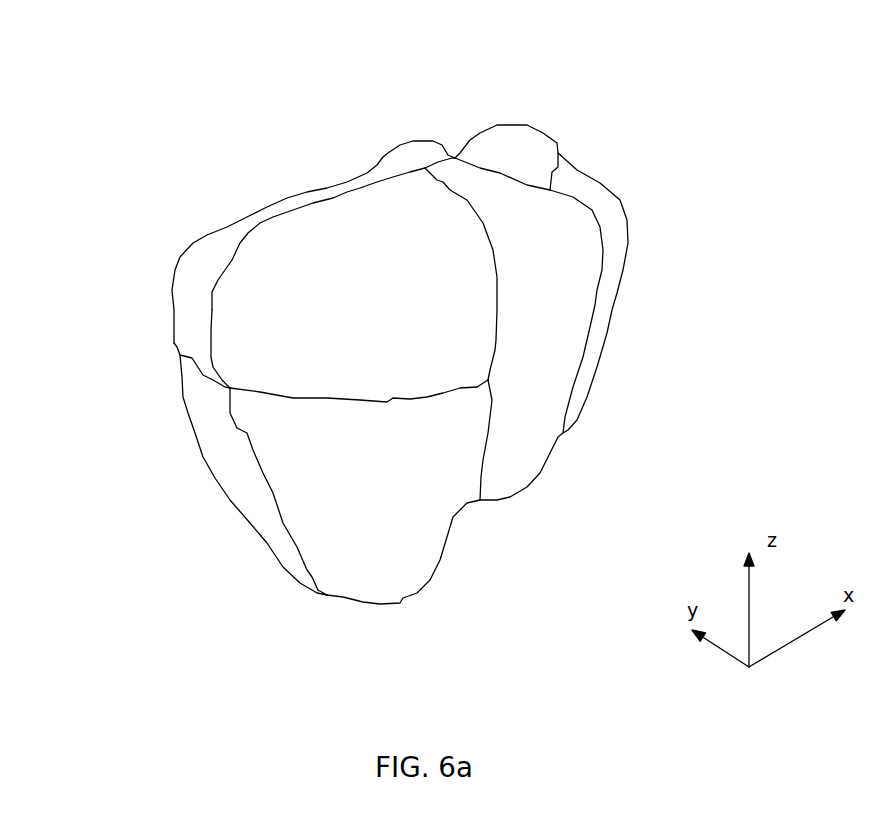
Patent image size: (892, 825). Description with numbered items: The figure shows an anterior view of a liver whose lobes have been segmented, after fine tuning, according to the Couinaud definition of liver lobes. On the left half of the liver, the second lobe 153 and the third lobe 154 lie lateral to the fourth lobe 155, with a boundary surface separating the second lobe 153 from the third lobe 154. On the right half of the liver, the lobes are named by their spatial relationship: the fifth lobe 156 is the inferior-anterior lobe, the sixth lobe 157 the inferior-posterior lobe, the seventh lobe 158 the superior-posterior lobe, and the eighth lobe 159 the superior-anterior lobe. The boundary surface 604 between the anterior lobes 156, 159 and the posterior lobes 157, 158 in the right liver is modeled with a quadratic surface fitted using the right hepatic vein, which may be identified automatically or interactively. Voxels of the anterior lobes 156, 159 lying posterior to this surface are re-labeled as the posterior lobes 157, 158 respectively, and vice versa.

The lobe 2 153 is at (530, 143).
The lobe 3 154 is at (613, 257).
The lobe 4 155 is at (520, 418).
The lobe 5 (inferior-anterior lobe) 156 is at (398, 532).
The lobe 6 (inferior-posterior lobe) 157 is at (242, 475).
The lobe 7 (superior-posterior lobe) 158 is at (203, 257).
The lobe 8 (superior-anterior lobe) 159 is at (398, 217).
The boundary surface 604 is at (210, 298).